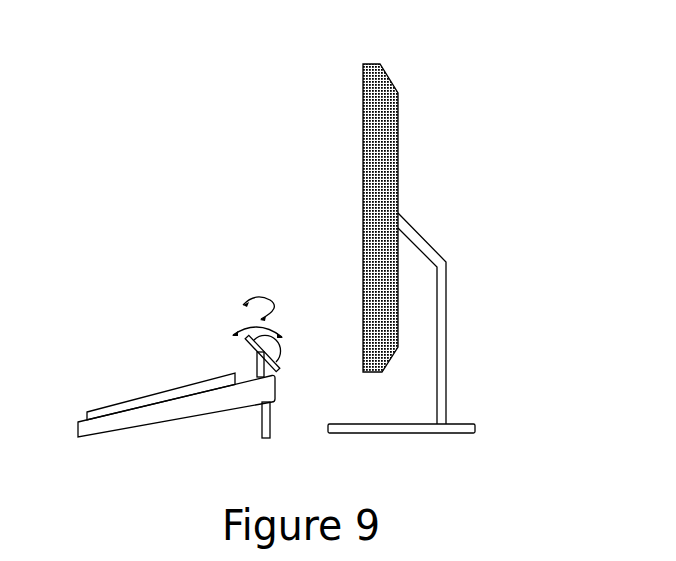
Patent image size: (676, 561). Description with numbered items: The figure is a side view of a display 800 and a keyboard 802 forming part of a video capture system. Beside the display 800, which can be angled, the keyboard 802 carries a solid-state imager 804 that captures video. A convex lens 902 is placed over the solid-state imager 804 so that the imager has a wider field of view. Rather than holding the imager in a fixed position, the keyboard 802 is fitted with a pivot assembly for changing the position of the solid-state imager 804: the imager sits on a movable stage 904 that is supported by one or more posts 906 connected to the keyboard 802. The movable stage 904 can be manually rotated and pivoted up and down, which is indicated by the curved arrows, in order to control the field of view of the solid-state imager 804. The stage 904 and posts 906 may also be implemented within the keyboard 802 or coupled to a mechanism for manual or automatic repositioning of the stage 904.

The display 800 is at (431, 81).
The keyboard 802 is at (115, 430).
The solid-state imager 804 is at (200, 335).
The convex lens 902 is at (278, 351).
The movable stage 904 is at (248, 346).
The posts 906 is at (257, 370).